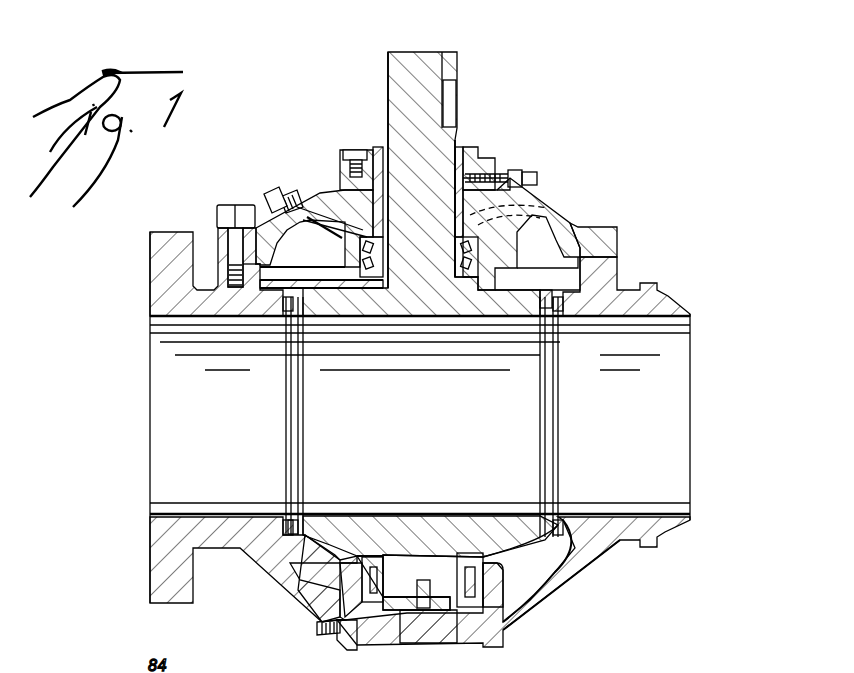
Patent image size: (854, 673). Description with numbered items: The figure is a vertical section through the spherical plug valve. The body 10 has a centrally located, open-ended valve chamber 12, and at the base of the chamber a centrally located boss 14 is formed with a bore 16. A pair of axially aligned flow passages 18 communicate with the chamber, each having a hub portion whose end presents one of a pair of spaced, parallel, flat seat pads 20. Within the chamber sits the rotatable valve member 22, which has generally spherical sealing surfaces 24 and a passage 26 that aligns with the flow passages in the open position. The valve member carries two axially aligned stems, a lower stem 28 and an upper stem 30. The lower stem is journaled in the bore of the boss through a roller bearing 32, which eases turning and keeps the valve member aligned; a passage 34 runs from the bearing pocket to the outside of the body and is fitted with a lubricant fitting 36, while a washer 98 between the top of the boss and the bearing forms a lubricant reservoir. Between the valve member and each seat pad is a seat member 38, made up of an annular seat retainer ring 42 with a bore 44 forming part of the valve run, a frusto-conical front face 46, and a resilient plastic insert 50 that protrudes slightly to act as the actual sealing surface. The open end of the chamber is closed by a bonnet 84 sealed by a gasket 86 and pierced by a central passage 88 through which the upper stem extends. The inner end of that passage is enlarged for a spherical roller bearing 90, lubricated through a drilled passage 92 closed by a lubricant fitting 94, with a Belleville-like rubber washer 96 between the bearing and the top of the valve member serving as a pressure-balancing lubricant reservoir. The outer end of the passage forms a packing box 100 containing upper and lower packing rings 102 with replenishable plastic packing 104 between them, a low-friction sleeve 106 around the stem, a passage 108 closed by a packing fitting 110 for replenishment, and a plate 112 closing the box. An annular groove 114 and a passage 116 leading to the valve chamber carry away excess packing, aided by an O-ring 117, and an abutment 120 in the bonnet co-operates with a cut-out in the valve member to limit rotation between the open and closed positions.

The body 10 is at (590, 577).
The valve chamber 12 is at (568, 572).
The boss 14 is at (500, 580).
The bore 16 is at (460, 530).
The flow passages 18 is at (221, 410).
The seat pads 20 is at (588, 284).
The valve member 22 is at (400, 530).
The spherical sealing surfaces 24 is at (324, 550).
The passage 26 is at (440, 497).
The stem 28 is at (440, 600).
The stem 30 is at (388, 62).
The roller bearing 32 is at (490, 575).
The passage 34 is at (340, 637).
The lubricant fitting 36 is at (317, 628).
The seat members 38 is at (560, 520).
The seat retainer ring 42 is at (544, 290).
The bore 44 is at (293, 520).
The front face 46 is at (285, 520).
The insert 50 is at (525, 530).
The bonnet 84 is at (620, 240).
The gasket 86 is at (620, 258).
The passage 88 is at (527, 183).
The spherical roller bearing 90 is at (358, 262).
The drilled passage 92 is at (296, 186).
The lubricant fitting 94 is at (270, 190).
The Belleville-like rubber washer 96 is at (357, 290).
The washer 98 is at (360, 545).
The packing box 100 is at (463, 175).
The packing rings 102 is at (373, 150).
The plastic packing 104 is at (530, 192).
The sleeve 106 is at (346, 182).
The passage 108 is at (495, 172).
The packing fitting 110 is at (515, 178).
The plate 112 is at (478, 170).
The annular groove 114 is at (340, 195).
The passage 116 is at (548, 208).
The O-ring 117 is at (338, 248).
The abutment 120 is at (530, 288).